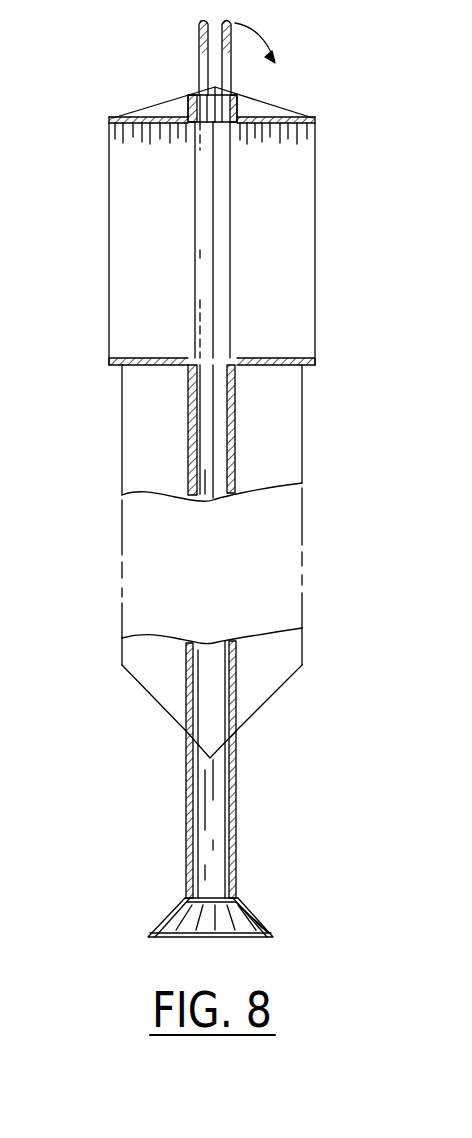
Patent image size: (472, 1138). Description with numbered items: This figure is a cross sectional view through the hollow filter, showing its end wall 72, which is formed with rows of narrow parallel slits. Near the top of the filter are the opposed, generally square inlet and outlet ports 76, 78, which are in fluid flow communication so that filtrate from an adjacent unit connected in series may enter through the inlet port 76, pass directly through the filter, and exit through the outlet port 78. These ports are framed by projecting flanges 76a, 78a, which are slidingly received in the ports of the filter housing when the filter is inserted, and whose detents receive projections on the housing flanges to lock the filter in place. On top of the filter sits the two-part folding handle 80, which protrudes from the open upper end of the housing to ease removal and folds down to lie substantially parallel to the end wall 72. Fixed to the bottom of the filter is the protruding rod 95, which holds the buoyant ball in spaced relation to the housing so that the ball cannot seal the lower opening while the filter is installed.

The end wall 72 is at (152, 107).
The inlet port 76 is at (298, 222).
The projecting flange 76a is at (315, 365).
The outlet port 78 is at (130, 222).
The projecting flange 78a is at (112, 358).
The two-part folding handle 80 is at (198, 48).
The protruding rod 95 is at (237, 873).